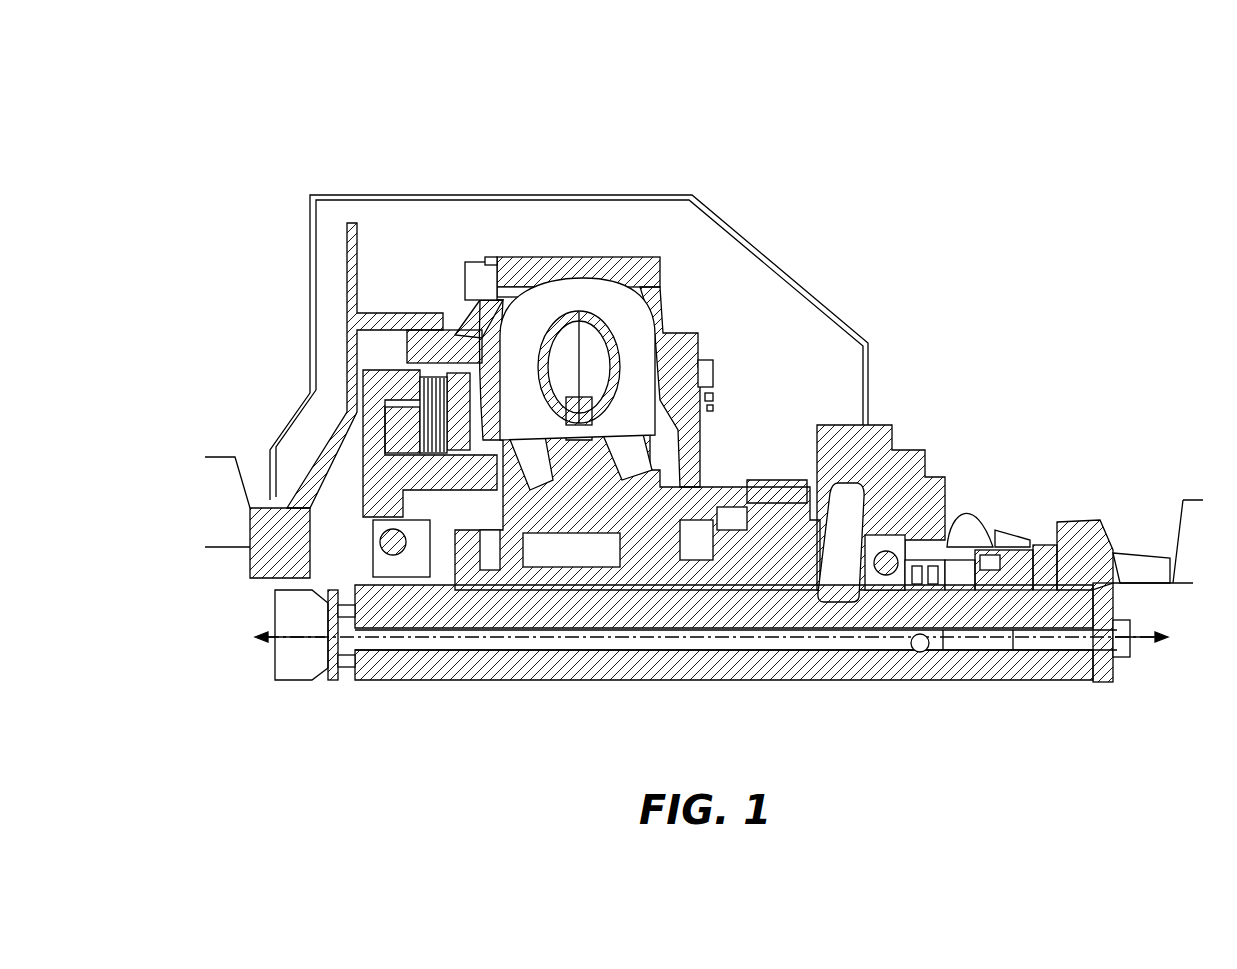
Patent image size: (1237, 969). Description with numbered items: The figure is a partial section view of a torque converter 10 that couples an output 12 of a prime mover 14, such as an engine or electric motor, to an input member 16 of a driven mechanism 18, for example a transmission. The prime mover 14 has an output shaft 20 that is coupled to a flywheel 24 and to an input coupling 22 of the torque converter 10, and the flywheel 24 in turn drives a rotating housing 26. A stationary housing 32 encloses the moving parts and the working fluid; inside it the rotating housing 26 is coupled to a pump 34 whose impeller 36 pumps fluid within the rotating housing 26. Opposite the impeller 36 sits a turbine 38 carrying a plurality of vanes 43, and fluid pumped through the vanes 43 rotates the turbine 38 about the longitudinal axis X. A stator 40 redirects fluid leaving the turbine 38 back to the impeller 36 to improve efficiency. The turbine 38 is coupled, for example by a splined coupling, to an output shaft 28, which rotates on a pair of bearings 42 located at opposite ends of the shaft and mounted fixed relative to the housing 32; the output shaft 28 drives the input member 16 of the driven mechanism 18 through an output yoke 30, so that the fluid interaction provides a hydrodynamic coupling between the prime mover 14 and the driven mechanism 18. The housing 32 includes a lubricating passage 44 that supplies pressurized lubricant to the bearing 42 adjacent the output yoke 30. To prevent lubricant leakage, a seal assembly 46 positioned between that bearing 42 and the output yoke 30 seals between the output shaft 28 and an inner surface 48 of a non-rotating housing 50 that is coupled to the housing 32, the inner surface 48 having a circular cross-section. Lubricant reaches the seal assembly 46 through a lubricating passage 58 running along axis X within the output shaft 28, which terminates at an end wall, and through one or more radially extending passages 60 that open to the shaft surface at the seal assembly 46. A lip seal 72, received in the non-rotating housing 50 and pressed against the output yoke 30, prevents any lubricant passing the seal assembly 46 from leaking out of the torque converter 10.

The torque converter 10 is at (470, 170).
The output 12 is at (262, 508).
The prime mover 14 is at (215, 457).
The input member 16 is at (1138, 560).
The driven mechanism 18 is at (1188, 500).
The output shaft 20 is at (228, 547).
The input coupling 22 is at (383, 348).
The flywheel 24 is at (347, 270).
The rotating housing 26 is at (602, 262).
The output shaft 28 is at (418, 615).
The output yoke 30 is at (1090, 522).
The housing 32 is at (358, 195).
The pump 34 is at (670, 352).
The impeller 36 is at (640, 330).
The turbine 38 is at (565, 320).
The stator 40 is at (565, 515).
The bearings 42 is at (372, 522).
The vanes 43 is at (505, 300).
The lubricating passage 44 is at (848, 494).
The seal assembly 46 is at (945, 562).
The inner surface 48 is at (928, 575).
The non-rotating housing 50 is at (1010, 550).
The lubricating passage 58 is at (762, 645).
The radially extending passage 60 is at (925, 652).
The lip seal 72 is at (1005, 545).